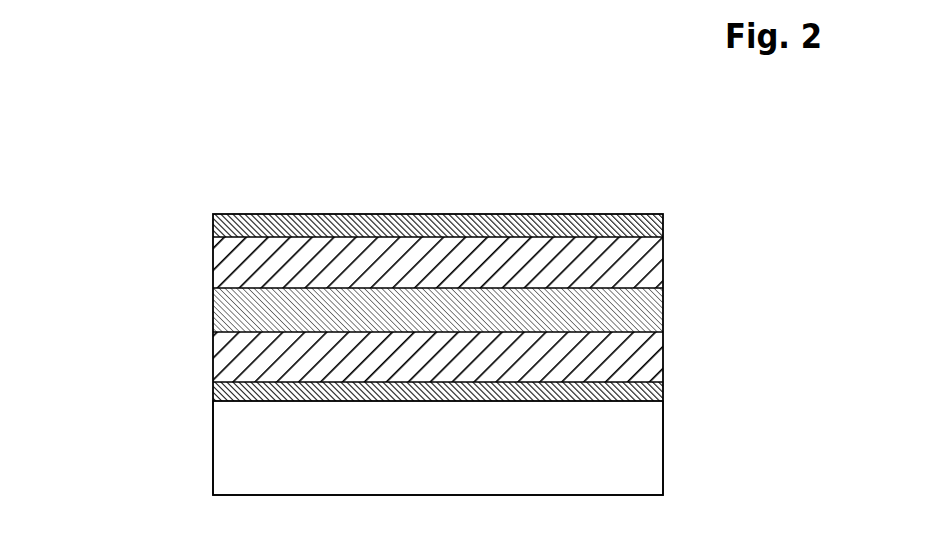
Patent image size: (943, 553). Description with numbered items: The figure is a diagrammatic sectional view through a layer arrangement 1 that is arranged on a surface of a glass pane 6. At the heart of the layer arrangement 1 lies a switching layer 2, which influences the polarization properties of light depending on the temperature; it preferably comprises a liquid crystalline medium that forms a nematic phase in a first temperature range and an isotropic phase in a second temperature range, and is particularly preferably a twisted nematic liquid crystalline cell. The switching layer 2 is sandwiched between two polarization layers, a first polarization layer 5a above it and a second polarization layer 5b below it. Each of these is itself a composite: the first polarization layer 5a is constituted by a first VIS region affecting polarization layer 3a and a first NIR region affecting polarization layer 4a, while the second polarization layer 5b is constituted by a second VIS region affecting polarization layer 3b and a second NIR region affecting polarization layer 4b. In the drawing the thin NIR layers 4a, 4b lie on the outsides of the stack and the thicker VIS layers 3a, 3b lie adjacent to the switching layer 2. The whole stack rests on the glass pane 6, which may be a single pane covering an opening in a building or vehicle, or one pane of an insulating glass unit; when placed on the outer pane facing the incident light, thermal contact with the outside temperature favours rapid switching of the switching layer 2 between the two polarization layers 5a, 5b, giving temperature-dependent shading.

The layer arrangement 1 is at (426, 297).
The switching layer 2 is at (664, 318).
The first VIS region affecting polarization layer 3a is at (664, 271).
The second VIS region affecting polarization layer 3b is at (664, 363).
The first NIR region affecting polarization layer 4a is at (664, 229).
The second NIR region affecting polarization layer 4b is at (664, 397).
The first polarization layer 5a is at (425, 235).
The second polarization layer 5b is at (426, 358).
The glass pane 6 is at (664, 447).